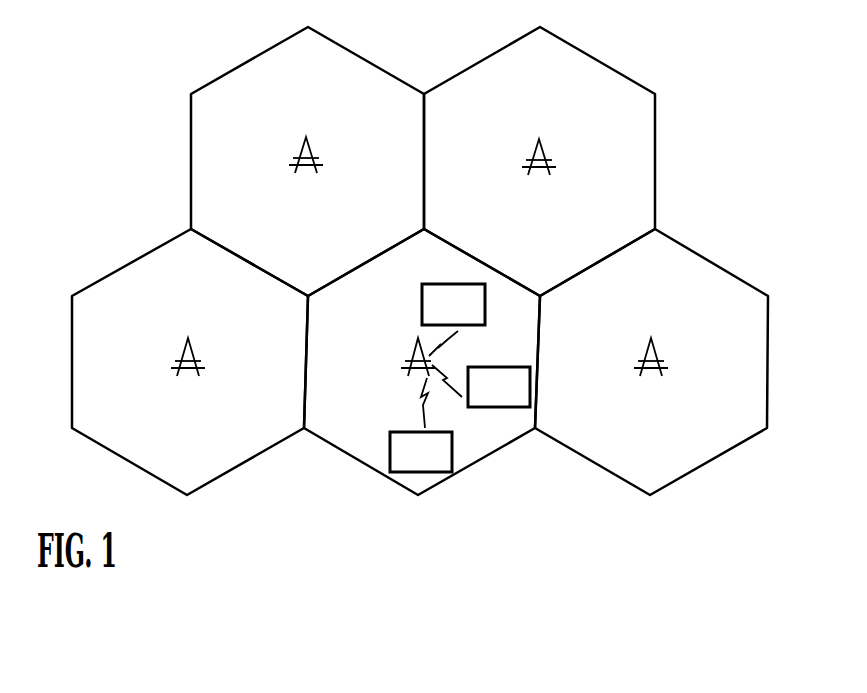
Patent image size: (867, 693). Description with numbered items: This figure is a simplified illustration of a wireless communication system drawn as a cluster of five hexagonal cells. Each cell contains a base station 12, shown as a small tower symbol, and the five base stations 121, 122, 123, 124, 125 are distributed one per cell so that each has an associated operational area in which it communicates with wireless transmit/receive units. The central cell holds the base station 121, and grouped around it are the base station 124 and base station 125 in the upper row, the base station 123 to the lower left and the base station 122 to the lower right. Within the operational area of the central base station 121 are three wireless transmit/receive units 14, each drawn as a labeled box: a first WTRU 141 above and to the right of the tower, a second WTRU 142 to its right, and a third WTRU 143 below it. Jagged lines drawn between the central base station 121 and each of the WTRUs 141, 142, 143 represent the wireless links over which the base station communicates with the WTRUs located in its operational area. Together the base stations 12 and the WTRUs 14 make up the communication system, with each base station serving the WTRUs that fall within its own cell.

The base station 12 is at (440, 260).
The base station 121 is at (397, 361).
The base station 122 is at (671, 358).
The base station 123 is at (208, 358).
The base station 124 is at (327, 155).
The base station 125 is at (558, 157).
The wireless transmit/receive unit 14 is at (436, 378).
The wireless transmit/receive unit 141 is at (475, 320).
The wireless transmit/receive unit 142 is at (481, 406).
The wireless transmit/receive unit 143 is at (397, 425).